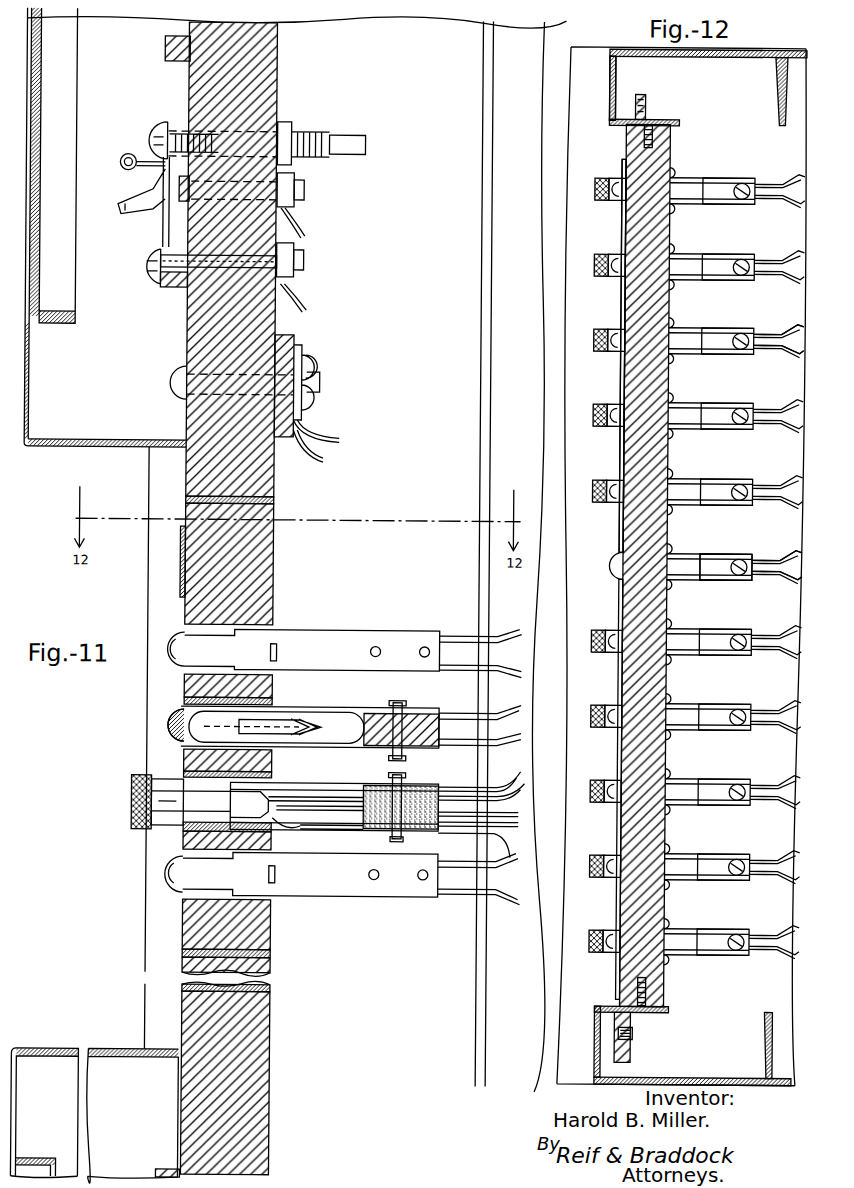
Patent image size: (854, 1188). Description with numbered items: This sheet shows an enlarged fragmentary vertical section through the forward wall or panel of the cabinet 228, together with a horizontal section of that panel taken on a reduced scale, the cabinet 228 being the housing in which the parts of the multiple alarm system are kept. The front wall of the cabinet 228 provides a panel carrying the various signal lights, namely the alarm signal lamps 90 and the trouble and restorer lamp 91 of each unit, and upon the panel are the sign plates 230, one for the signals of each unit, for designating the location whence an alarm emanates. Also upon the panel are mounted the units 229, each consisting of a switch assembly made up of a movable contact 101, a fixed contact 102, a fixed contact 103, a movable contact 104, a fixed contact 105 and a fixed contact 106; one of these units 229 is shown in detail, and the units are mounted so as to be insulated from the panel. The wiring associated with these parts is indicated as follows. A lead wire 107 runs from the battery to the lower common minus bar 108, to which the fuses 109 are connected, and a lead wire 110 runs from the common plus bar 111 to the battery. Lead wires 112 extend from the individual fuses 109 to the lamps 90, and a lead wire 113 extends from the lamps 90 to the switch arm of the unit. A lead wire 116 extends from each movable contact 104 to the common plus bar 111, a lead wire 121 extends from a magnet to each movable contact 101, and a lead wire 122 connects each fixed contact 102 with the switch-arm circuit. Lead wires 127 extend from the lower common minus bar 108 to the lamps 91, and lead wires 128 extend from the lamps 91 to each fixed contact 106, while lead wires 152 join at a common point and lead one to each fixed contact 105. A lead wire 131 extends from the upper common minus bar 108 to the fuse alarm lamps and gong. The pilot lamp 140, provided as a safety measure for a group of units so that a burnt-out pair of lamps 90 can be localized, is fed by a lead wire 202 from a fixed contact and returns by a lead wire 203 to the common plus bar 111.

In FIG. 11, the alarm signal lamps 90 is at (323, 642).
In FIG. 12, the alarm signal lamps 90 is at (718, 416).
In FIG. 11, the trouble and restorer lamp 91 is at (338, 895).
In FIG. 11, the movable contact 101 is at (344, 784).
In FIG. 11, the fixed contact 102 is at (300, 798).
In FIG. 11, the fixed contact 103 is at (314, 805).
In FIG. 11, the movable contact 104 is at (262, 806).
In FIG. 11, the fixed contact 105 is at (308, 828).
In FIG. 11, the fixed contact 106 is at (280, 824).
In FIG. 11, the lead wire 107 is at (297, 302).
In FIG. 11, the common minus bar 108 is at (170, 62).
In FIG. 11, the fuse 109 is at (162, 229).
In FIG. 11, the lead wire 110 is at (337, 440).
In FIG. 11, the common plus bar 111 is at (296, 338).
In FIG. 11, the lead wire 112 is at (482, 696).
In FIG. 12, the lead wire 112 is at (793, 352).
In FIG. 11, the lead wire 113 is at (481, 665).
In FIG. 12, the lead wire 113 is at (792, 333).
In FIG. 11, the lead wire 116 is at (522, 813).
In FIG. 11, the lead wire 121 is at (481, 770).
In FIG. 11, the lead wire 122 is at (510, 806).
In FIG. 11, the lead wire 127 is at (510, 900).
In FIG. 11, the lead wire 128 is at (483, 863).
In FIG. 11, the lead wire 131 is at (299, 229).
In FIG. 12, the pilot lamp 140 is at (722, 568).
In FIG. 11, the lead wire 152 is at (521, 826).
In FIG. 12, the lead wire 202 is at (798, 576).
In FIG. 12, the lead wire 203 is at (793, 560).
In FIG. 11, the cabinet 228 is at (192, 1020).
In FIG. 12, the cabinet 228 is at (607, 126).
In FIG. 11, the unit 229 is at (132, 790).
In FIG. 12, the unit 229 is at (604, 202).
In FIG. 11, the sign plate 230 is at (181, 585).
In FIG. 12, the sign plate 230 is at (619, 516).